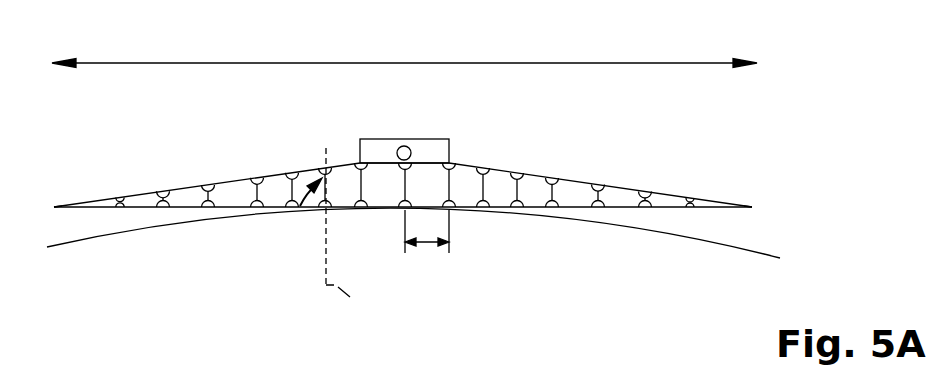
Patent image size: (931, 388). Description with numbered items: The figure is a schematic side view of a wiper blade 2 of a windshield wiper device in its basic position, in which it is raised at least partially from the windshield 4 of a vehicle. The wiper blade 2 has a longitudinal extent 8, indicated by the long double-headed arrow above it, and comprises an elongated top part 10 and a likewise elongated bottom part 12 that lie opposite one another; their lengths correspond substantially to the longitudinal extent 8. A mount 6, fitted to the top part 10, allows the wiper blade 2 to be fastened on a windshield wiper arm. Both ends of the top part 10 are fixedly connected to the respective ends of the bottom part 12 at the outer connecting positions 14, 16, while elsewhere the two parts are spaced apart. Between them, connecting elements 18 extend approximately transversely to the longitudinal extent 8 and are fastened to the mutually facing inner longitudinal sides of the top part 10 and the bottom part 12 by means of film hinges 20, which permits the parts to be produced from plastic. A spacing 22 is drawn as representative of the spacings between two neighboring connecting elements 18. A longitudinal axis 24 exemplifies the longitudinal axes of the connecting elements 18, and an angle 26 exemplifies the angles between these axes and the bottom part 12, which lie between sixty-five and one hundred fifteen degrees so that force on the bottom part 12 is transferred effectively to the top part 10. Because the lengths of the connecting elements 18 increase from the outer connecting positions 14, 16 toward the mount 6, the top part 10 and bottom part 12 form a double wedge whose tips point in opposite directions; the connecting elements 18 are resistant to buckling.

The wiper blade 2 is at (408, 182).
The windshield 4 is at (676, 236).
The mount 6 is at (435, 150).
The longitudinal extent 8 is at (404, 63).
The top part 10 is at (228, 181).
The bottom part 12 is at (580, 213).
The outer connecting position 14 is at (58, 207).
The outer connecting position 16 is at (752, 207).
The connecting elements 18 is at (289, 200).
The film hinges 20 is at (292, 178).
The spacing 22 is at (425, 246).
The longitudinal axis 24 is at (361, 230).
The angle 26 is at (303, 210).